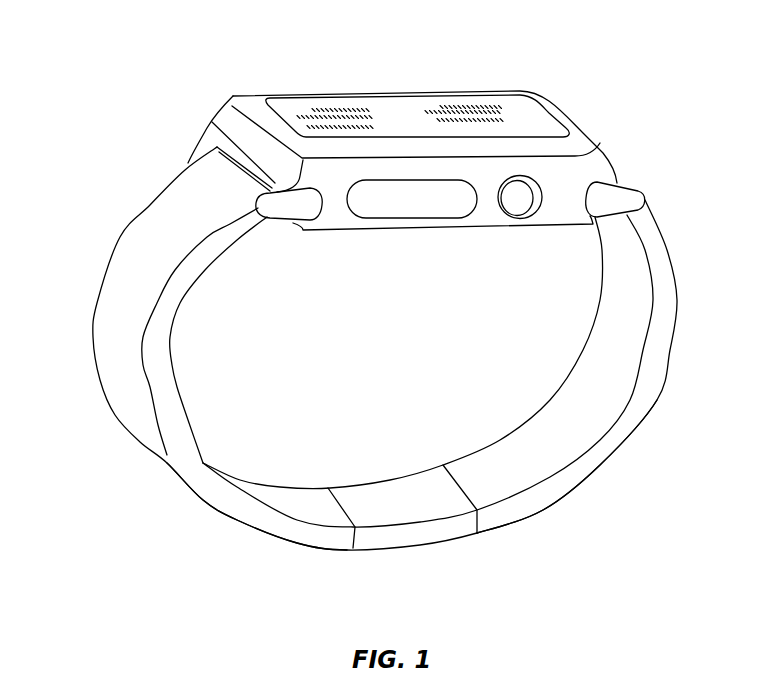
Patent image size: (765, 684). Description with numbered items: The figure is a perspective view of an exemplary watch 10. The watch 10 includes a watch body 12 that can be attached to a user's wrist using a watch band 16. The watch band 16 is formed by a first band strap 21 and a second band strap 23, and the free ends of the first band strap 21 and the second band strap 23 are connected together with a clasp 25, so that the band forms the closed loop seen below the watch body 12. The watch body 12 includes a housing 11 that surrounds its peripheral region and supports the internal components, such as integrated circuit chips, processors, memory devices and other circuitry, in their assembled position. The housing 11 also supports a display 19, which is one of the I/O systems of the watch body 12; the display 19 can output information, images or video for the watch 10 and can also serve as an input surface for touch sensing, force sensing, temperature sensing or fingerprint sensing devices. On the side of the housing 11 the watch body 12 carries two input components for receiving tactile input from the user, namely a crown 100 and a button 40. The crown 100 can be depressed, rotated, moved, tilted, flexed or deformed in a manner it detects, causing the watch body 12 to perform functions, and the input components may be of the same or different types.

The watch 10 is at (110, 92).
The housing 11 is at (618, 157).
The watch body 12 is at (179, 125).
The watch band 16 is at (113, 237).
The display 19 is at (377, 118).
The first band strap 21 is at (543, 511).
The second band strap 23 is at (231, 521).
The clasp 25 is at (407, 553).
The button 40 is at (422, 220).
The crown 100 is at (523, 203).